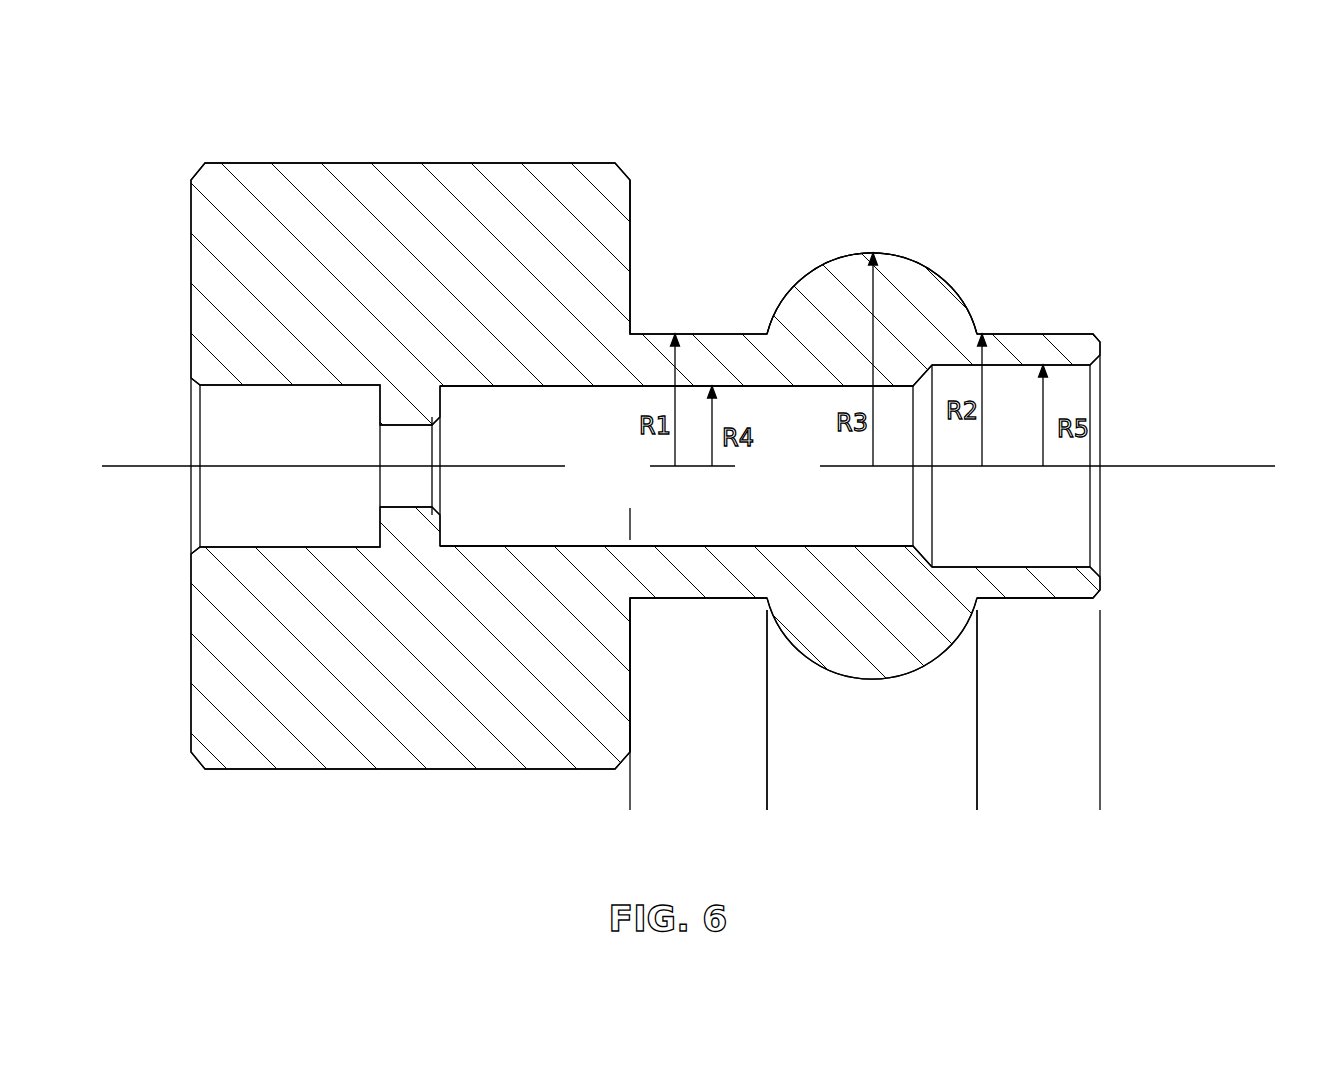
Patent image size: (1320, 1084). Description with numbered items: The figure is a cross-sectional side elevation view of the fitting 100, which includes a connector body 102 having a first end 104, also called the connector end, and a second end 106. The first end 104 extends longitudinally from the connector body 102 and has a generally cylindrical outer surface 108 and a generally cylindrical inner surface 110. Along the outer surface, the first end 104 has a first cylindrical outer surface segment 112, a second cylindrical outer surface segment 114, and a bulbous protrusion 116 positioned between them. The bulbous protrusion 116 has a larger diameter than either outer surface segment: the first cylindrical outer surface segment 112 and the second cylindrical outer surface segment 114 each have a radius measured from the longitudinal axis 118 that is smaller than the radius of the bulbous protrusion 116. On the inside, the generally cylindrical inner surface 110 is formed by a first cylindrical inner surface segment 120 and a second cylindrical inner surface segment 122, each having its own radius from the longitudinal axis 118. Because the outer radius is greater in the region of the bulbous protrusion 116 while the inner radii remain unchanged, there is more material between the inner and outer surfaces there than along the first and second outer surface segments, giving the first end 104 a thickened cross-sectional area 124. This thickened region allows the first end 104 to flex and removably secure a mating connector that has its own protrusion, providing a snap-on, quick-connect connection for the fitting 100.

The fitting 100 is at (1107, 112).
The connector body 102 is at (557, 163).
The first end 104 is at (1058, 327).
The second end 106 is at (260, 163).
The generally cylindrical outer surface 108 is at (662, 330).
The generally cylindrical inner surface 110 is at (892, 390).
The first cylindrical outer surface segment 112 is at (767, 797).
The second cylindrical outer surface segment 114 is at (1100, 797).
The bulbous protrusion 116 is at (767, 797).
The longitudinal axis 118 is at (1185, 455).
The first cylindrical inner surface segment 120 is at (630, 522).
The second cylindrical inner surface segment 122 is at (932, 532).
The thickened cross-sectional area 124 is at (900, 263).